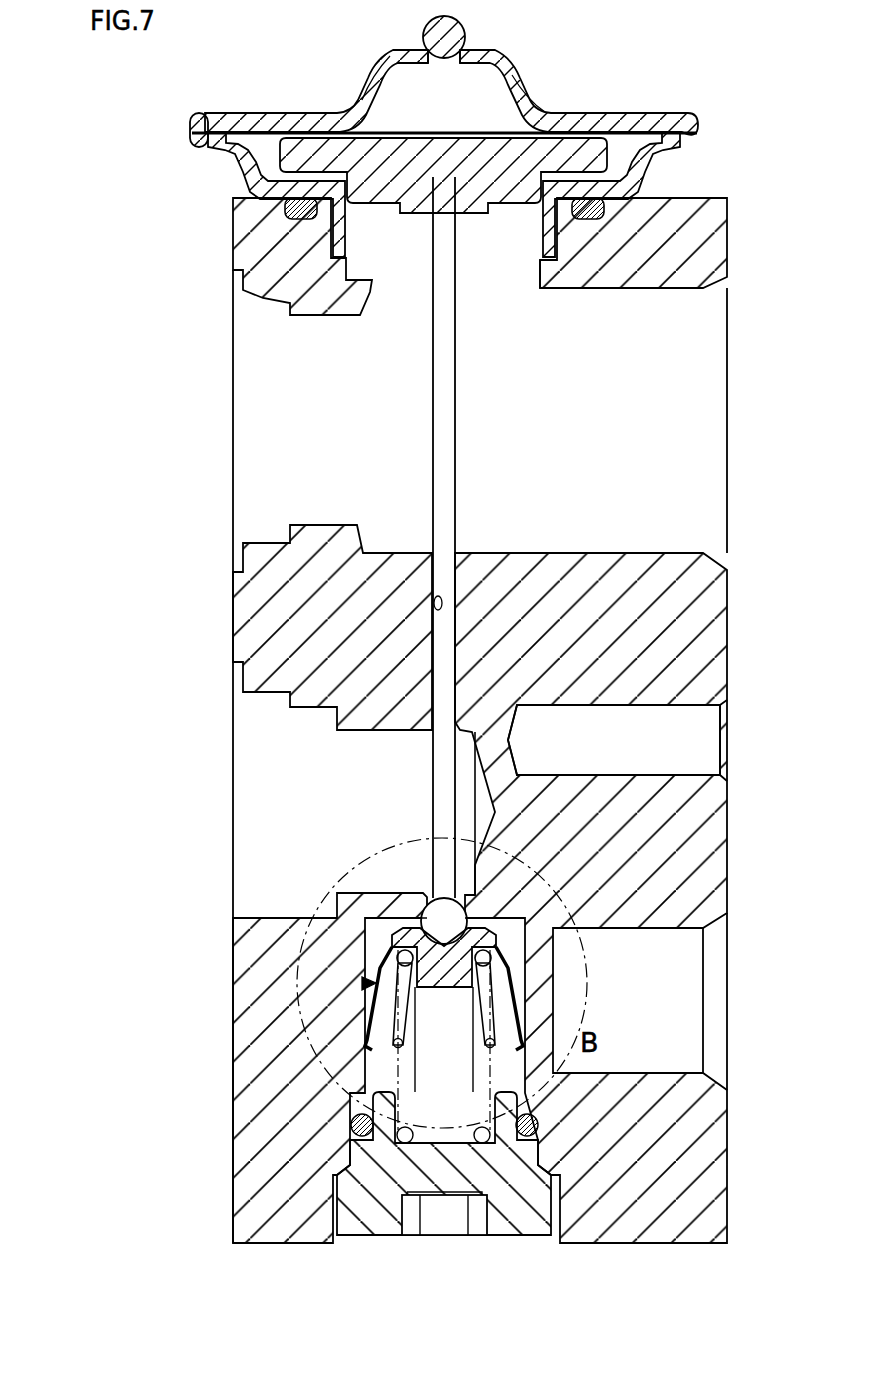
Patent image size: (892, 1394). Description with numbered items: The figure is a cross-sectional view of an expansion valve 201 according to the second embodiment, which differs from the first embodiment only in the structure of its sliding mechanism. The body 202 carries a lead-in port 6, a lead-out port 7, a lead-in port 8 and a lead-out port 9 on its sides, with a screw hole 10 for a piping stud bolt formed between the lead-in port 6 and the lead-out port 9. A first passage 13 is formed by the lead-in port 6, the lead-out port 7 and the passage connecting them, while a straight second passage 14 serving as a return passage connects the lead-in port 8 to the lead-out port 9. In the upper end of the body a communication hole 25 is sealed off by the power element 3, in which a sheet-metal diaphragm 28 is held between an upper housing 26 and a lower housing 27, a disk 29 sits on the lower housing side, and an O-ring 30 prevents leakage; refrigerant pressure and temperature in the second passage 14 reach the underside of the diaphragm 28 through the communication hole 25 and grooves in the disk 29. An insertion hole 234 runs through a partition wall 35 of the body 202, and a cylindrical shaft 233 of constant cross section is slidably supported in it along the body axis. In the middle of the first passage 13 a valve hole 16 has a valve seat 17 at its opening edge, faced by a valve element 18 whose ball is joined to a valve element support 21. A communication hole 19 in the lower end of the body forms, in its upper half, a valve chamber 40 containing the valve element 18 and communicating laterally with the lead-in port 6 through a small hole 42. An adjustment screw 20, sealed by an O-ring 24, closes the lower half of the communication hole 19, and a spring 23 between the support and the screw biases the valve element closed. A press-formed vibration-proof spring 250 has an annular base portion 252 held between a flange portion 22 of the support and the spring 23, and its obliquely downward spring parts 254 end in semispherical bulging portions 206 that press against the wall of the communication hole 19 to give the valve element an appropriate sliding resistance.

The expansion valve 201 is at (628, 108).
The power element 3 is at (550, 107).
The upper housing 26 is at (268, 116).
The diaphragm 28 is at (652, 116).
The lower housing 27 is at (240, 172).
The disk 29 is at (282, 170).
The O-ring 30 is at (290, 207).
The communication hole 25 is at (545, 270).
The body 202 is at (722, 246).
The lead-out port 9 is at (722, 353).
The second passage 14 is at (665, 404).
The shaft 233 is at (453, 500).
The partition wall 35 is at (470, 546).
The insertion hole 234 is at (434, 600).
The lead-in port 8 is at (258, 393).
The screw hole 10 is at (704, 698).
The lead-out port 7 is at (247, 760).
The valve hole 16 is at (425, 897).
The valve element 18 is at (395, 912).
The valve chamber 40 is at (388, 922).
The base portion 252 is at (385, 955).
The vibration-proof spring 250 is at (382, 985).
The spring part 254 is at (390, 1010).
The bulging portion 206 is at (385, 1035).
The spring 23 is at (400, 1060).
The communication hole 19 is at (395, 1092).
The O-ring 24 is at (350, 1132).
The valve seat 17 is at (470, 905).
The flange portion 22 is at (475, 925).
The valve element support 21 is at (530, 930).
The lead-in port 6 is at (716, 987).
The first passage 13 is at (653, 990).
The small hole 42 is at (538, 1010).
The adjustment screw 20 is at (556, 1165).